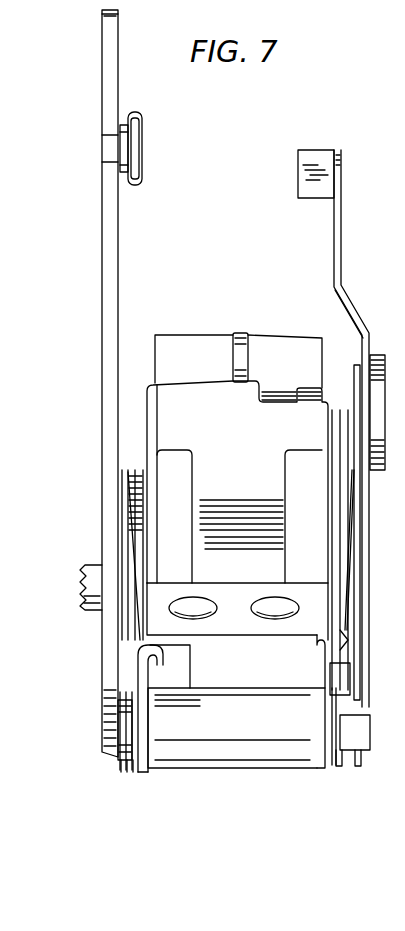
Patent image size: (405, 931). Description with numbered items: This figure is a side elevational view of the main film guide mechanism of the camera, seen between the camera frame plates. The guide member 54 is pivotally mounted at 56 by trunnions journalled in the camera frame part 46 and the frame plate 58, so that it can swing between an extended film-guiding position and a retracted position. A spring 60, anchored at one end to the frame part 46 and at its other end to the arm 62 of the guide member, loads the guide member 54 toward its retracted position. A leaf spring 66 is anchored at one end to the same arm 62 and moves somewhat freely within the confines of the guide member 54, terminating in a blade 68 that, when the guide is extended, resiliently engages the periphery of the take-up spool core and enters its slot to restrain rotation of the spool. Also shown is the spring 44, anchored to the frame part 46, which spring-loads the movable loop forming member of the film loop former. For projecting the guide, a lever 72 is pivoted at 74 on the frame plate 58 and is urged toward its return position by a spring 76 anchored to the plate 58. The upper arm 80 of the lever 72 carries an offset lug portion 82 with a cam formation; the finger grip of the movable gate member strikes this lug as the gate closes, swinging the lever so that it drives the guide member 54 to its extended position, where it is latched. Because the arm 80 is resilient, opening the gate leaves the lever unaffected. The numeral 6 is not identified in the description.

The actuator assembly 6 is at (304, 529).
The spring 44 is at (125, 548).
The camera frame part 46 is at (102, 402).
The guide member 54 is at (318, 562).
The pivot 56 is at (131, 762).
The camera frame plate 58 is at (353, 380).
The spring 60 is at (117, 708).
The arm 62 is at (148, 678).
The leaf spring 66 is at (273, 476).
The blade 68 is at (185, 392).
The lever 72 is at (345, 316).
The pivot 74 is at (355, 408).
The spring 76 is at (350, 596).
The upper arm 80 is at (337, 218).
The offset lug portion 82 is at (315, 166).